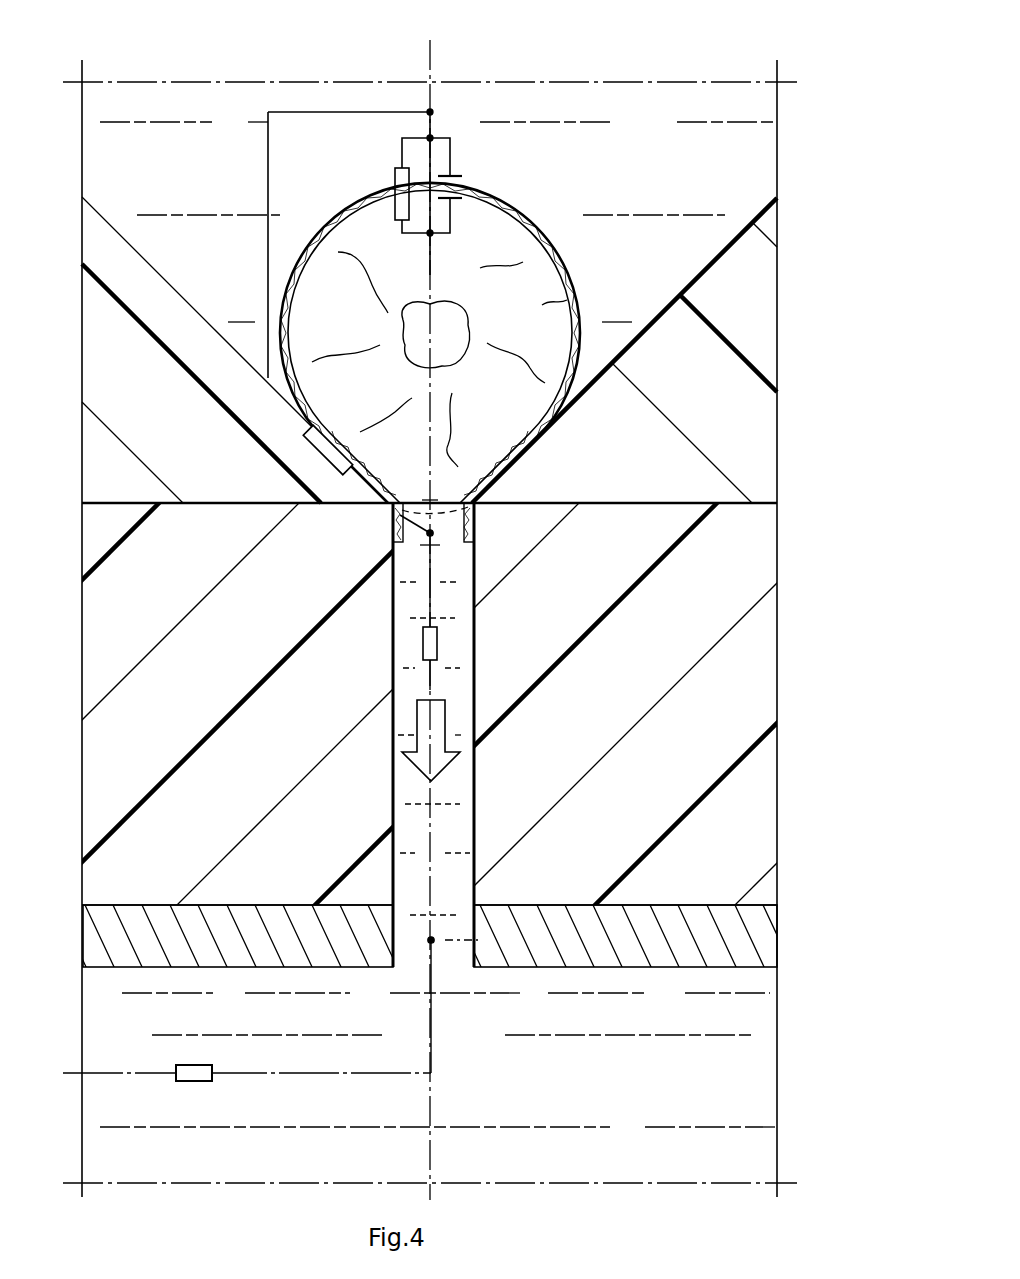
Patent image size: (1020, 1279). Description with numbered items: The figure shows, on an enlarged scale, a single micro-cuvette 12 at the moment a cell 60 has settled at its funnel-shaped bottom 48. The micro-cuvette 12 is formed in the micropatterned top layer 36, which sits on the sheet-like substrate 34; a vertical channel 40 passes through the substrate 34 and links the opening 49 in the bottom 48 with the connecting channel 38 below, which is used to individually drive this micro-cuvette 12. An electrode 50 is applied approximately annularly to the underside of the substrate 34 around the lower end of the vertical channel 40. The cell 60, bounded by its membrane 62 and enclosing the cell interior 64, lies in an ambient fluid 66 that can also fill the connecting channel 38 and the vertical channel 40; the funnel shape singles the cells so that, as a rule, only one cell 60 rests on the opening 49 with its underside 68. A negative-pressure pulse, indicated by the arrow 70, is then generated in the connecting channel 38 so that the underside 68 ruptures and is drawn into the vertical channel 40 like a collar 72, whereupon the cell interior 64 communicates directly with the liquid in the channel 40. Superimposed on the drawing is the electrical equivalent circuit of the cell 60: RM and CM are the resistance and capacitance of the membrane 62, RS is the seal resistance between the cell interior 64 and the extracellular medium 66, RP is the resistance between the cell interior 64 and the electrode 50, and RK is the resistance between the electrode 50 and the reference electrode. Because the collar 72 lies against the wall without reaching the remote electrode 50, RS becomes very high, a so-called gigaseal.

The micro-cuvette 12 is at (644, 98).
The substrate 34 is at (752, 563).
The top layer 36 is at (753, 440).
The connecting channel 38 is at (752, 1078).
The vertical channel 40 is at (467, 822).
The bottom 48 is at (691, 275).
The opening 49 is at (480, 480).
The electrode 50 is at (760, 943).
The cell 60 is at (457, 316).
The membrane 62 is at (354, 196).
The cell interior 64 is at (542, 306).
The ambient fluid 66 is at (656, 176).
The underside 68 is at (408, 503).
The negative-pressure pulse 70 is at (448, 716).
The collar 72 is at (477, 528).
The membrane resistance RM is at (350, 243).
The membrane capacitance CM is at (461, 185).
The seal resistance RS is at (326, 455).
The resistance between cell interior and electrode RP is at (444, 595).
The resistance between electrode and reference electrode RK is at (270, 1025).